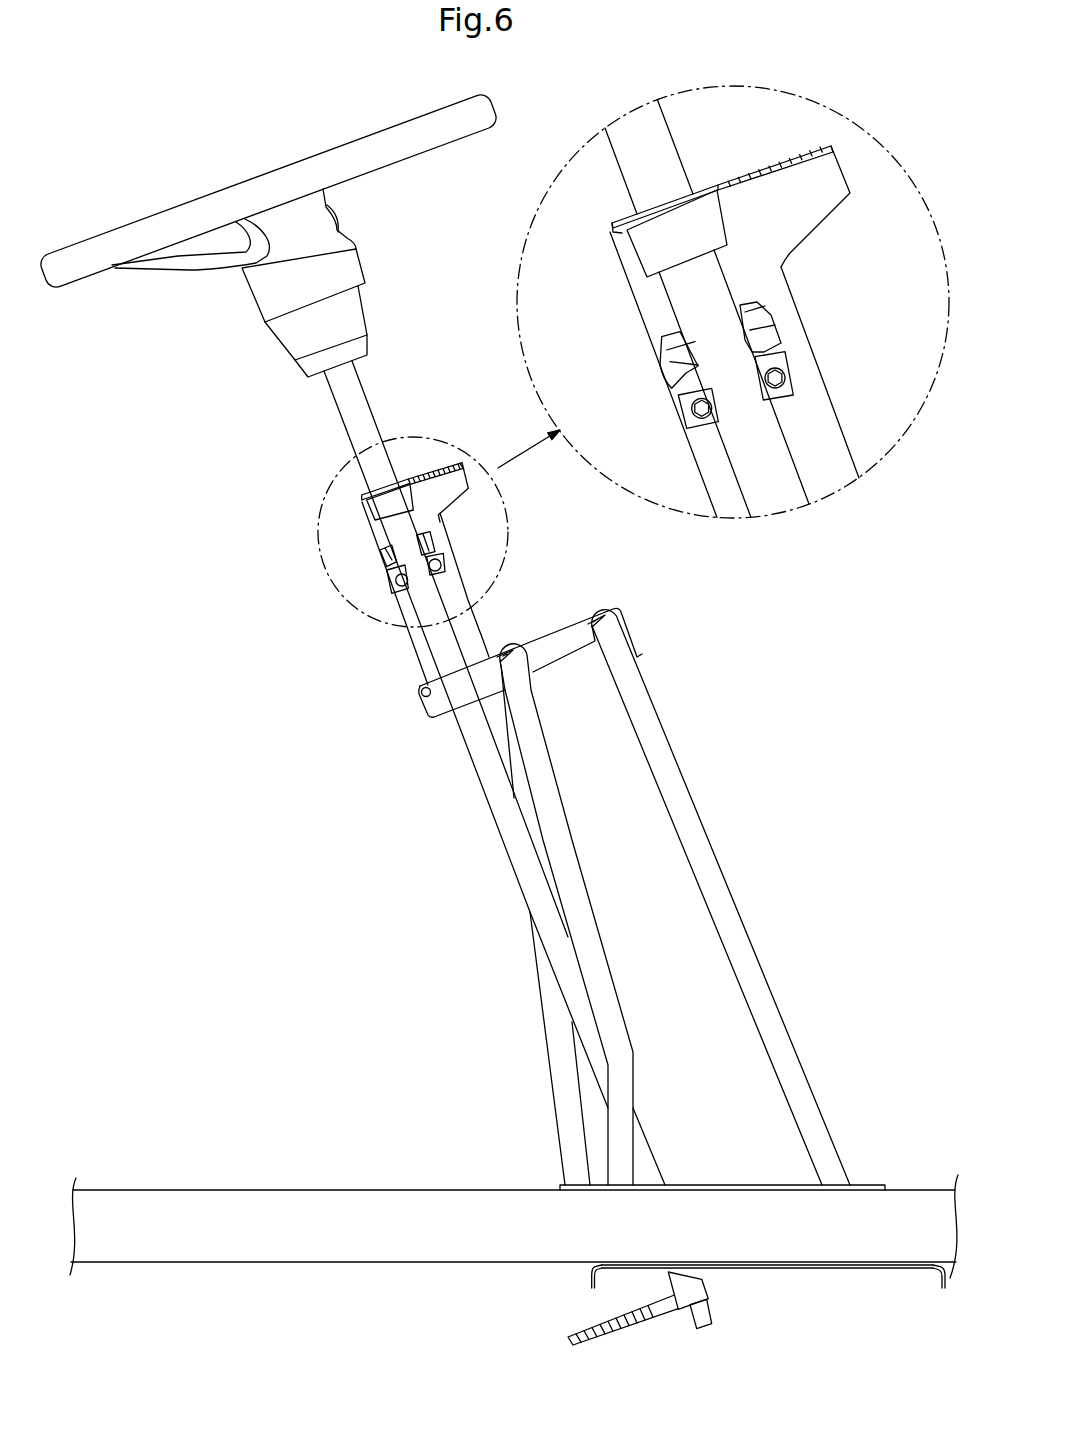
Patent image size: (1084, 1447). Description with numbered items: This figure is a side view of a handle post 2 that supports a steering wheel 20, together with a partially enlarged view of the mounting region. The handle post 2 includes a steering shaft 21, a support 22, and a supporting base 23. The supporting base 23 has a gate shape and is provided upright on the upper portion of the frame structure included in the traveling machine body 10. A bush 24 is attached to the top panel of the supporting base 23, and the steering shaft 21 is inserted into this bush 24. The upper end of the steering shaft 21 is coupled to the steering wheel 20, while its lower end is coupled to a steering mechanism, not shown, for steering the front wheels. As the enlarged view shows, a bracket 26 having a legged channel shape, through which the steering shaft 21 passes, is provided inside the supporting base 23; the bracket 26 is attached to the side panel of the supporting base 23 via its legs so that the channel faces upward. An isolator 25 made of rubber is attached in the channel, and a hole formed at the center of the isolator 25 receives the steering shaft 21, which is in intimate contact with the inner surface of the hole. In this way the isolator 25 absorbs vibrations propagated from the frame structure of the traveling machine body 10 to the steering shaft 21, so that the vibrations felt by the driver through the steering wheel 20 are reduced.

The handle post 2 is at (665, 718).
The traveling machine body 10 is at (350, 1186).
The steering wheel 20 is at (262, 190).
The steering shaft 21 is at (362, 430).
The support 22 is at (712, 873).
The supporting base 23 is at (420, 663).
The bush 24 is at (390, 502).
The isolator 25 is at (388, 570).
The bracket 26 is at (437, 542).